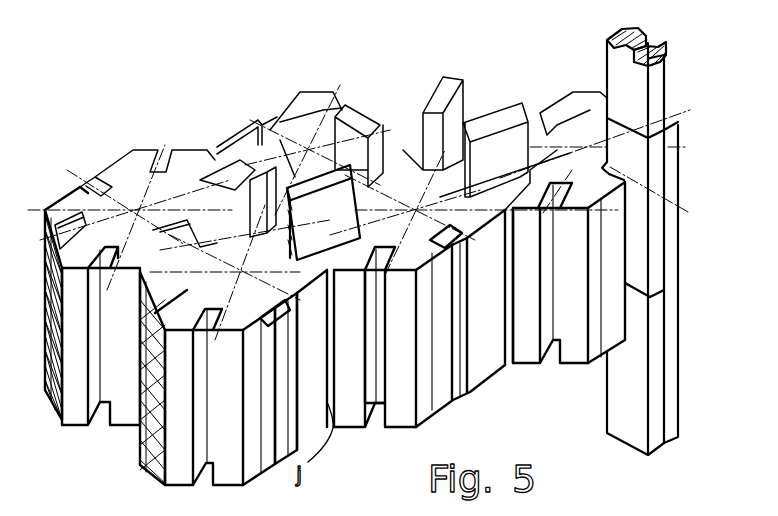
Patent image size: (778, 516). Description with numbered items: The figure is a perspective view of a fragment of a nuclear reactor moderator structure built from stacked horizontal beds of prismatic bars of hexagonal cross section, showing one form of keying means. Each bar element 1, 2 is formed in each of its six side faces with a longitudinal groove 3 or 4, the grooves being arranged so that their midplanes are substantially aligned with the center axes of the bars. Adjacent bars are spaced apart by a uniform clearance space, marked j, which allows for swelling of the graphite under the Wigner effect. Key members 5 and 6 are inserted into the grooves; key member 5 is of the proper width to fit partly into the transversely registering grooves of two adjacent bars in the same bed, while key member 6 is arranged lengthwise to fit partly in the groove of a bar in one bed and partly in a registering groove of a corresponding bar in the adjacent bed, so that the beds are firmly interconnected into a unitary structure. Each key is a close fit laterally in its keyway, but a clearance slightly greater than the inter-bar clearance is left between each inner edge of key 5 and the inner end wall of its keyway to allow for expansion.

The bar element 1 is at (172, 480).
The bar element 2 is at (350, 418).
The longitudinal groove 3 is at (325, 258).
The longitudinal groove 4 is at (373, 283).
The key member 5 is at (323, 212).
The key member 6 is at (640, 241).